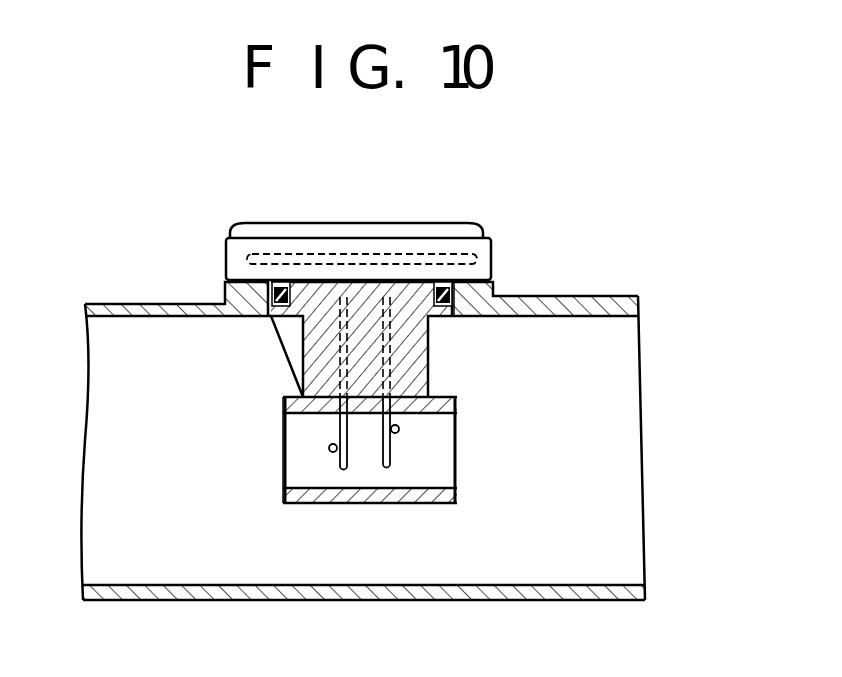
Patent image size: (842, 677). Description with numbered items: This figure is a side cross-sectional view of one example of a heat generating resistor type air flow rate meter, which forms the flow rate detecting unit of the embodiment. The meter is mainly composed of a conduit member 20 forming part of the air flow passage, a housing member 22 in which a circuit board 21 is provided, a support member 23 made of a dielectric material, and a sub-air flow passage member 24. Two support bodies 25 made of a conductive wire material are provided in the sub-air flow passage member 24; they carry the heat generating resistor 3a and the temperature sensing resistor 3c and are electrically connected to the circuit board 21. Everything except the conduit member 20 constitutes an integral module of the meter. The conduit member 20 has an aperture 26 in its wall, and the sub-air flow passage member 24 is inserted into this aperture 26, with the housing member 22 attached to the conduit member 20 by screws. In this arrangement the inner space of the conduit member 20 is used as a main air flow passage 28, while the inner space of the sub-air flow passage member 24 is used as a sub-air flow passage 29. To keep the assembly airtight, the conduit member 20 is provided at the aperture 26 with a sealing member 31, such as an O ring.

The conduit member 20 is at (612, 296).
The circuit board 21 is at (390, 252).
The housing member 22 is at (312, 222).
The support member 23 is at (303, 355).
The sub-air flow passage member 24 is at (283, 503).
The support bodies 25 is at (343, 470).
The aperture 26 is at (455, 317).
The main air flow passage 28 is at (148, 340).
The sub-air flow passage 29 is at (437, 470).
The sealing member 31 is at (495, 290).
The heat generating resistor 3a is at (329, 448).
The temperature sensing resistor 3c is at (399, 428).